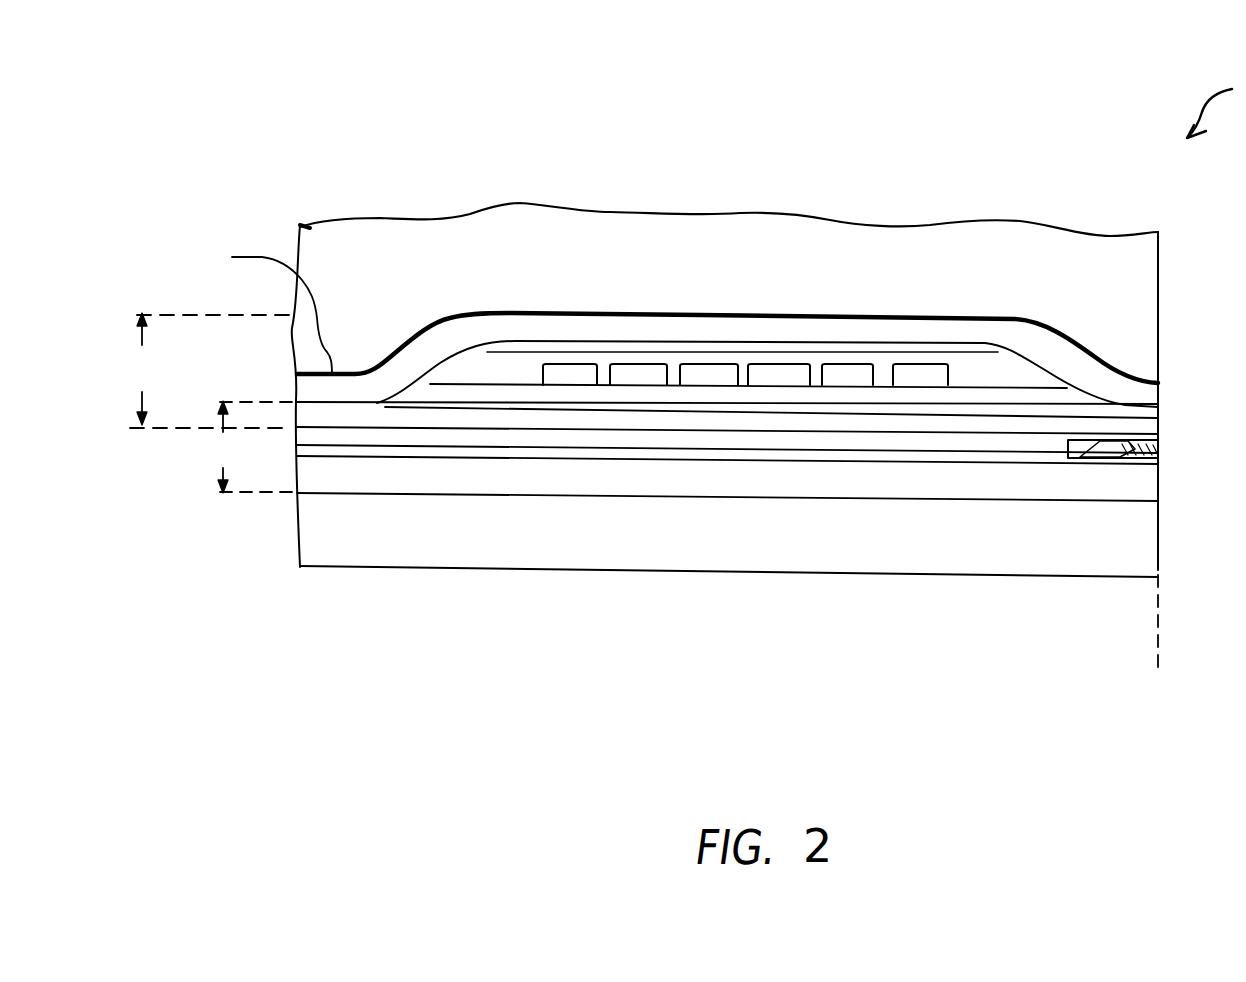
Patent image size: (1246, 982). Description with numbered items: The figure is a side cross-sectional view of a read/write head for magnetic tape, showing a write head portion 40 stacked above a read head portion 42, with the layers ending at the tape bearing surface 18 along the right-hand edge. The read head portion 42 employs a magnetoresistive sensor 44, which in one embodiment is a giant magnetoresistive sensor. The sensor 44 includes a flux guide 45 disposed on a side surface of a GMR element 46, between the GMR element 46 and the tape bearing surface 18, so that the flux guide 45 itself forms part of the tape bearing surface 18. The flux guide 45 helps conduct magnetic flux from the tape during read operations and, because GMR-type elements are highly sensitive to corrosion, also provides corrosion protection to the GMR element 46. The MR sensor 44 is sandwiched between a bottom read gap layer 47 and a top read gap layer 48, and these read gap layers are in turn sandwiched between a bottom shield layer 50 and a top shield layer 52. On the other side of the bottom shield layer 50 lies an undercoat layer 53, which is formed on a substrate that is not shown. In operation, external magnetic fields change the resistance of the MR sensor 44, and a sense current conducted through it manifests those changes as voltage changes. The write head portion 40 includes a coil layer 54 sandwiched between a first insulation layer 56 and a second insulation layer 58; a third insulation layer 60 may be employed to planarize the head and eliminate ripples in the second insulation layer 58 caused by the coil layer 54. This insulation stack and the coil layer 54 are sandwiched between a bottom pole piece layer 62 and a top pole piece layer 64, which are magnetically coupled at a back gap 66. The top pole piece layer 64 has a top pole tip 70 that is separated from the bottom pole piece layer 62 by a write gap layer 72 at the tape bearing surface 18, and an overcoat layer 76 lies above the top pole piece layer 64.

The tape bearing surface 18 is at (1162, 627).
The write head portion 40 is at (212, 370).
The read head portion 42 is at (253, 447).
The MR sensor 44 is at (1102, 463).
The flux guide 45 is at (1163, 450).
The GMR element 46 is at (1095, 459).
The bottom read gap layer 47 is at (789, 458).
The top read gap layer 48 is at (707, 438).
The bottom shield layer 50 is at (898, 488).
The top shield layer 52 is at (1008, 430).
The undercoat layer 53 is at (323, 537).
The coil layer 54 is at (850, 363).
The first insulation layer 56 is at (582, 397).
The second insulation layer 58 is at (1017, 373).
The third insulation layer 60 is at (545, 350).
The bottom pole piece layer 62 is at (729, 571).
The top pole piece layer 64 is at (987, 316).
The back gap 66 is at (256, 309).
The top pole tip 70 is at (1160, 388).
The write gap layer 72 is at (1160, 410).
The overcoat layer 76 is at (1117, 242).